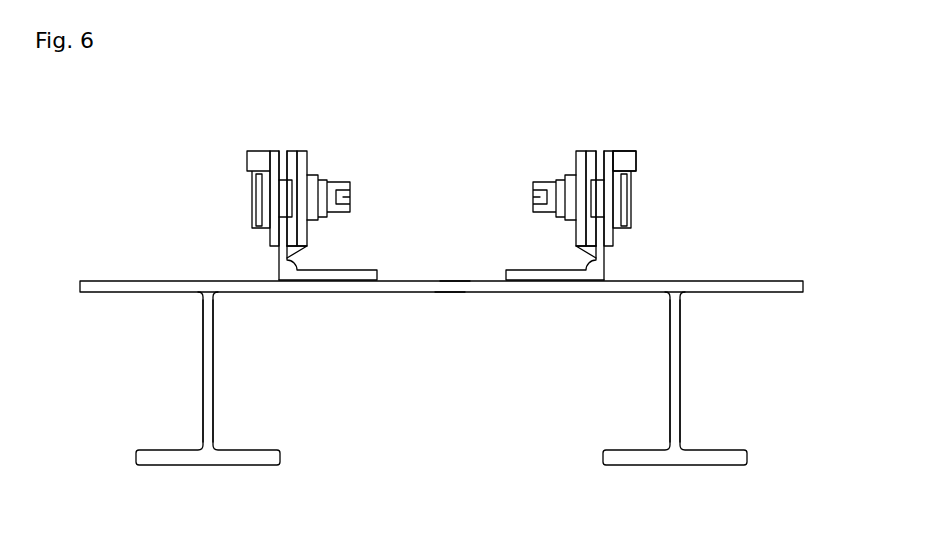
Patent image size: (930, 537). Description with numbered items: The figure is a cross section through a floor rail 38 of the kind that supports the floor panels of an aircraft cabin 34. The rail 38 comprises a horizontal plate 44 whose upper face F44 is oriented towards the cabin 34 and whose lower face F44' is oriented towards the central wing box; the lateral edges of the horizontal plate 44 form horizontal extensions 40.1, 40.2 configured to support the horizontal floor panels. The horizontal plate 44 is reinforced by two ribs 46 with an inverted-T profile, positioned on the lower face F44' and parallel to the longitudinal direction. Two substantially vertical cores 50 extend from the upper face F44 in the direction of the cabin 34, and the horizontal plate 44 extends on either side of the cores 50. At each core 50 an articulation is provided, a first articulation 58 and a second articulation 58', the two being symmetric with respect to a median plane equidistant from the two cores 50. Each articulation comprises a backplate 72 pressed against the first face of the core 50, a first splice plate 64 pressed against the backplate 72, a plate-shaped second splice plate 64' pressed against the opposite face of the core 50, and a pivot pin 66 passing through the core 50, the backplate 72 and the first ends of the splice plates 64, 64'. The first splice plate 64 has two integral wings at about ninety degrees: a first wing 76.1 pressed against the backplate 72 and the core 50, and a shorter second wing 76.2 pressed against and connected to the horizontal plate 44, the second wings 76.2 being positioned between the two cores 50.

The cabin 34 is at (445, 147).
The rail 38 is at (717, 147).
The horizontal extension 40.1 is at (113, 293).
The horizontal extension 40.2 is at (740, 293).
The horizontal plate 44 is at (405, 293).
The rib 46 is at (213, 363).
The core 50 is at (277, 268).
The first articulation 58 is at (271, 167).
The second articulation 58' is at (615, 167).
The first splice plate 64 is at (441, 243).
The second splice plate 64' is at (443, 198).
The pivot pin 66 is at (247, 195).
The backplate 72 is at (295, 152).
The first wing 76.1 is at (304, 168).
The second wing 76.2 is at (326, 276).
The upper face F44 is at (458, 241).
The lower face F44' is at (462, 331).